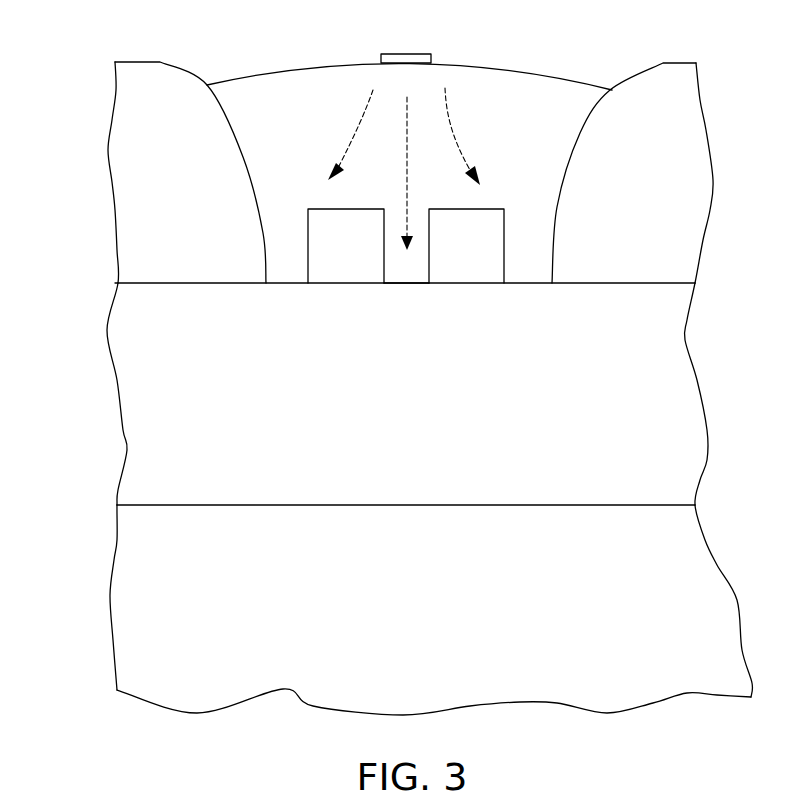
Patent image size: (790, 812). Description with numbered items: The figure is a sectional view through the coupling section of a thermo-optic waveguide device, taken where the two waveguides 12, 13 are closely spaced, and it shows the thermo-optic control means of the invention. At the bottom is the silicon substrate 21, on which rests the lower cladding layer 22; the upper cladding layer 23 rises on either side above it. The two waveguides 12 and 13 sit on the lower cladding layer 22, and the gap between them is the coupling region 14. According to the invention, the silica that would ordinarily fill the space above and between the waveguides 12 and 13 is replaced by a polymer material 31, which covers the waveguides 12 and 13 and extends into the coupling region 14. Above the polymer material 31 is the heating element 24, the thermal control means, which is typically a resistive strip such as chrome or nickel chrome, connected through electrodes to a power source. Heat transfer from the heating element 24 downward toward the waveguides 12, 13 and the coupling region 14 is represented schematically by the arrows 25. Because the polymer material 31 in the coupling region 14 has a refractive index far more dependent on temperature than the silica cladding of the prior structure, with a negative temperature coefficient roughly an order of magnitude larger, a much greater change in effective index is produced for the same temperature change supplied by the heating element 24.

The waveguide 12 is at (325, 275).
The waveguide 13 is at (488, 273).
The coupling region 14 is at (409, 264).
The silicon substrate 21 is at (133, 596).
The lower cladding layer 22 is at (150, 380).
The upper cladding layer 23 is at (165, 182).
The heating element 24 is at (418, 56).
The heat transfer arrows 25 is at (457, 132).
The polymer material 31 is at (308, 88).